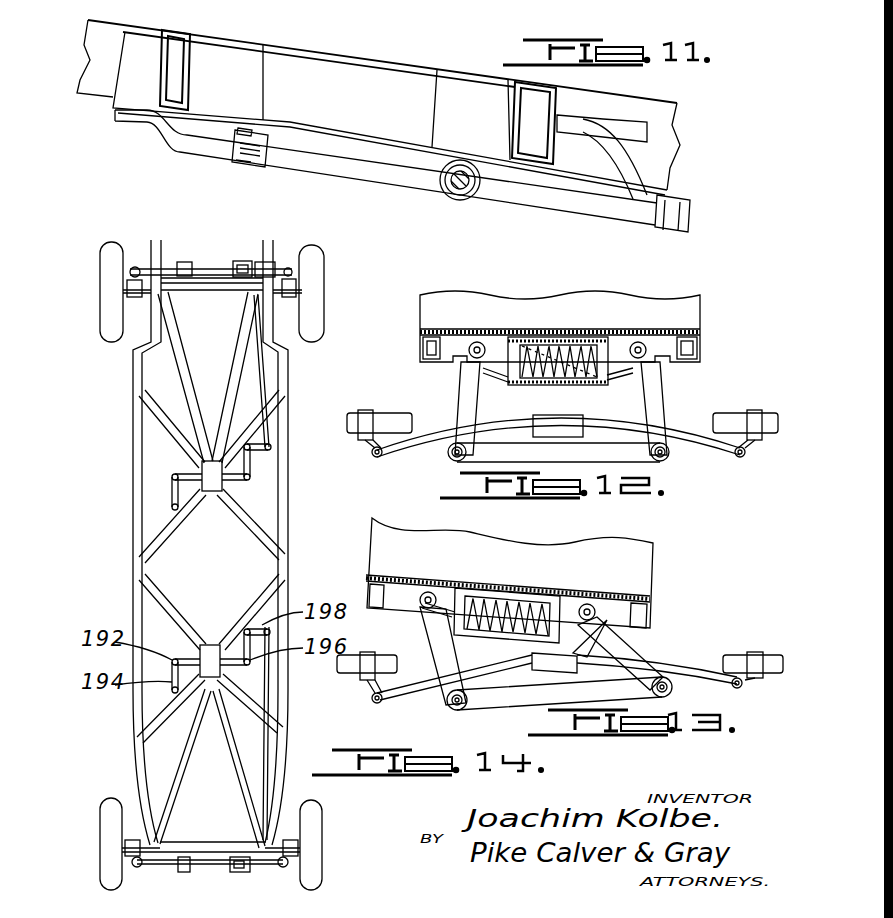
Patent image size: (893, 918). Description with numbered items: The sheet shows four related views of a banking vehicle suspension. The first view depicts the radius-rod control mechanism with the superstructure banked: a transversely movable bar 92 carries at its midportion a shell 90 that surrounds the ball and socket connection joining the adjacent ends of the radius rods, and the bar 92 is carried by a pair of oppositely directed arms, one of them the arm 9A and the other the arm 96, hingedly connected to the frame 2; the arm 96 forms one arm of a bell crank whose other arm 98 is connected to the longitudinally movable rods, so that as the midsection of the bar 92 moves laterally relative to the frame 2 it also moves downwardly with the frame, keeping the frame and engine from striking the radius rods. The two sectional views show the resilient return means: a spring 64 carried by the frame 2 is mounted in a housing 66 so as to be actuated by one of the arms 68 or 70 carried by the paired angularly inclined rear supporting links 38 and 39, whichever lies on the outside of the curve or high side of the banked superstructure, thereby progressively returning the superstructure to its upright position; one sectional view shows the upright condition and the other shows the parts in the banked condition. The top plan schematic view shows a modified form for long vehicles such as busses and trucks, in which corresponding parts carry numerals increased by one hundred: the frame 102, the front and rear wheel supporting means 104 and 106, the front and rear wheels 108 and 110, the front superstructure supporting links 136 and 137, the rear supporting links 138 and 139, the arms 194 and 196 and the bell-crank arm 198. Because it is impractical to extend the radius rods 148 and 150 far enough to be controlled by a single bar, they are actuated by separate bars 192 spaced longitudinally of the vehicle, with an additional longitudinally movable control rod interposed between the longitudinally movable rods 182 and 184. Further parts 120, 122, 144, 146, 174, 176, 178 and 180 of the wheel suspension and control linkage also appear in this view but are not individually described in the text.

In FIG. 11, the frame 2 is at (190, 58).
In FIG. 12, the frame 2 is at (700, 340).
In FIG. 13, the frame 2 is at (650, 600).
In FIG. 11, the frame arm 9A is at (188, 145).
In FIG. 11, the shell 90 is at (455, 198).
In FIG. 11, the transversely movable bar 92 is at (555, 215).
In FIG. 11, the arm 96 is at (650, 160).
In FIG. 11, the bell crank arm 98 is at (648, 137).
In FIG. 12, the rear supporting link 38 is at (462, 392).
In FIG. 13, the rear supporting link 38 is at (432, 640).
In FIG. 12, the rear supporting link 39 is at (660, 392).
In FIG. 13, the rear supporting link 39 is at (632, 655).
In FIG. 12, the spring 64 is at (554, 345).
In FIG. 13, the spring 64 is at (510, 600).
In FIG. 12, the housing 66 is at (550, 383).
In FIG. 12, the arm 68 is at (495, 380).
In FIG. 13, the arm 68 is at (455, 600).
In FIG. 12, the arm 70 is at (615, 383).
In FIG. 13, the arm 70 is at (587, 612).
In FIG. 14, the frame 102 is at (135, 470).
In FIG. 14, the front wheel supporting means 104 is at (118, 842).
In FIG. 14, the rear wheel supporting means 106 is at (188, 300).
In FIG. 14, the front wheels 108 is at (305, 842).
In FIG. 14, the rear wheels 110 is at (318, 311).
In FIG. 14, the hub 120 is at (283, 870).
In FIG. 14, the axle 122 is at (300, 270).
In FIG. 14, the front superstructure supporting link 136 is at (180, 872).
In FIG. 14, the front superstructure supporting link 137 is at (238, 872).
In FIG. 14, the rear supporting link 138 is at (185, 262).
In FIG. 14, the rear supporting link 139 is at (238, 261).
In FIG. 14, the axle 144 is at (205, 866).
In FIG. 14, the hub 146 is at (138, 265).
In FIG. 14, the radius rod 148 is at (183, 780).
In FIG. 14, the radius rod 150 is at (183, 350).
In FIG. 14, the cross bar 174 is at (245, 845).
In FIG. 14, the bracket 176 is at (292, 262).
In FIG. 14, the bracket 178 is at (242, 872).
In FIG. 14, the bracket 180 is at (252, 262).
In FIG. 14, the longitudinally movable rod 182 is at (268, 695).
In FIG. 14, the longitudinally movable rod 184 is at (268, 373).
In FIG. 14, the bar 192 is at (175, 472).
In FIG. 14, the arm 194 is at (172, 500).
In FIG. 14, the arm 196 is at (250, 474).
In FIG. 14, the bell crank arm 198 is at (260, 440).